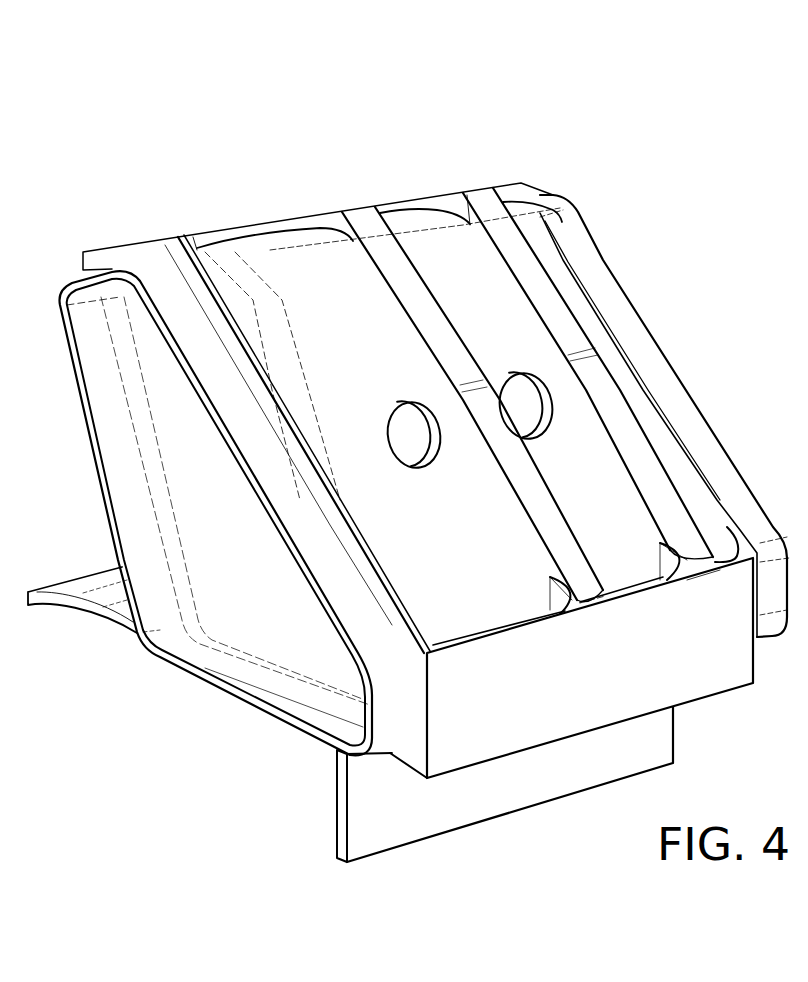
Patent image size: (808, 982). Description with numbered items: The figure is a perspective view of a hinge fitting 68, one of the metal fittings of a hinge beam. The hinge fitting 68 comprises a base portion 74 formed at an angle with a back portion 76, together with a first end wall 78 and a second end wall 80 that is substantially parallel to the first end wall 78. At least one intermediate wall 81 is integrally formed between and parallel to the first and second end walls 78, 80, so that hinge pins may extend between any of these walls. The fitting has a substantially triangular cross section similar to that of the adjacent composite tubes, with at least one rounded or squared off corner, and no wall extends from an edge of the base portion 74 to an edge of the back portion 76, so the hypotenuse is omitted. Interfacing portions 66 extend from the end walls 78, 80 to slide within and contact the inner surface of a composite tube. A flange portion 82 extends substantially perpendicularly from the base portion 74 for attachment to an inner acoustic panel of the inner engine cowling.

The hinge fitting 68 is at (320, 117).
The interfacing portion 66 is at (120, 453).
The base portion 74 is at (712, 697).
The back portion 76 is at (233, 283).
The first end wall 78 is at (280, 633).
The second end wall 80 is at (625, 291).
The intermediate wall 81 is at (345, 265).
The flange portion 82 is at (535, 788).